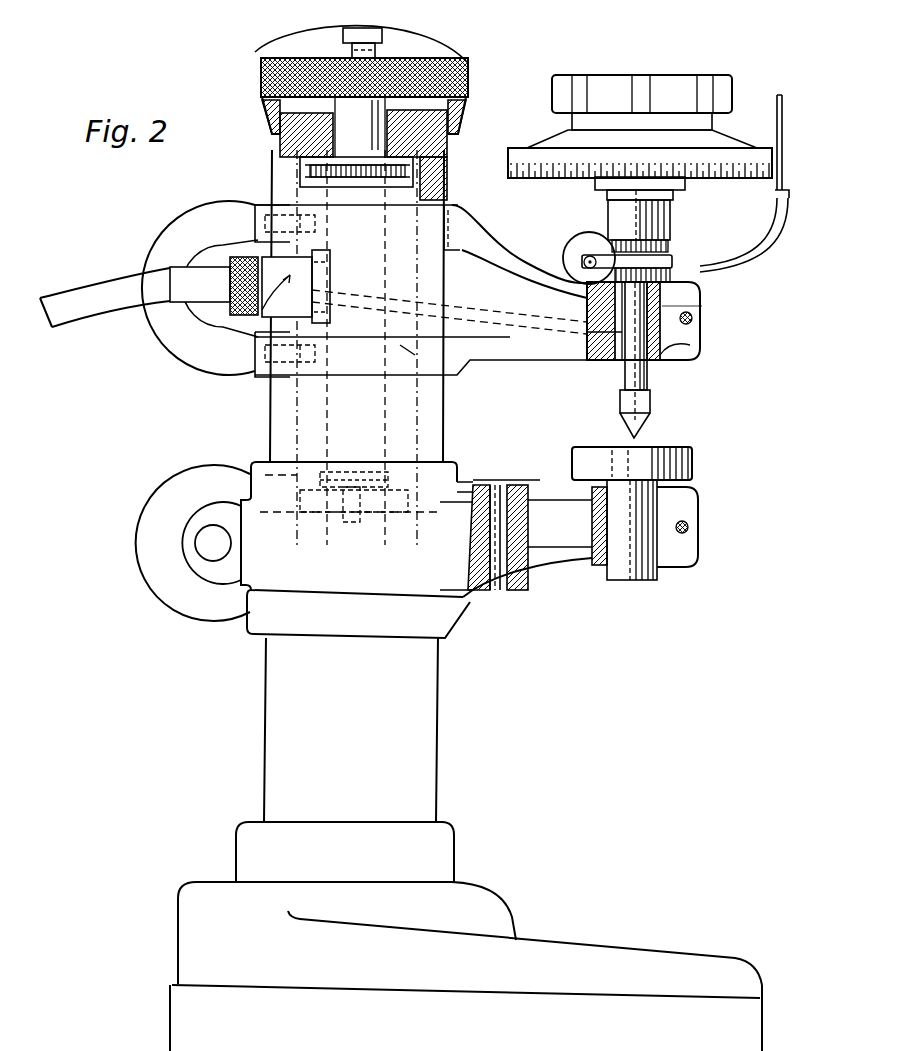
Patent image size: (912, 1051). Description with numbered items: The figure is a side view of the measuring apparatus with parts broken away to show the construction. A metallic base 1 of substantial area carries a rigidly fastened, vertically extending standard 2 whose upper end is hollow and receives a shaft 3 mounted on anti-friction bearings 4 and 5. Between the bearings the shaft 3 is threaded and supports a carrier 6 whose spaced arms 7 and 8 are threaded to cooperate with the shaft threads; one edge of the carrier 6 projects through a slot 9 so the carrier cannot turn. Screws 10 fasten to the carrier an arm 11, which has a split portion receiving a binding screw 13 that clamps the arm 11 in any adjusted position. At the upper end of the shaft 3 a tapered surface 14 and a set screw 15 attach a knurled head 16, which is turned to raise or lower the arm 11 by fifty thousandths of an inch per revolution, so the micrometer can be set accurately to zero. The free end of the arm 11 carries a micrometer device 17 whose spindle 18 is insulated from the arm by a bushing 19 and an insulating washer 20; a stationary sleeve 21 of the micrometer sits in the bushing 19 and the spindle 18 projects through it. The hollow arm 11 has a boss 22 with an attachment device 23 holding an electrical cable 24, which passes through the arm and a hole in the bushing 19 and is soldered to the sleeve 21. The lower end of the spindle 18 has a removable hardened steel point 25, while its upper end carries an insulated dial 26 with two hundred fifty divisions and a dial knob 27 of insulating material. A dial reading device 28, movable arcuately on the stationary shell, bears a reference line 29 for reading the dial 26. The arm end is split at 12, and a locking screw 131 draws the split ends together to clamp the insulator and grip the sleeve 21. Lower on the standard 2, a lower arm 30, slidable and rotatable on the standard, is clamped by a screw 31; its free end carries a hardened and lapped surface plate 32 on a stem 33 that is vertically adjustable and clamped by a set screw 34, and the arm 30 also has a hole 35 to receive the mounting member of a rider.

The metallic base 1 is at (183, 931).
The standard 2 is at (268, 705).
The shaft 3 is at (375, 435).
The anti-friction bearing 4 is at (390, 485).
The anti-friction bearing 5 is at (305, 176).
The carrier 6 is at (280, 290).
The arm of carrier 7 is at (452, 238).
The arm of carrier 8 is at (412, 355).
The slot 9 is at (285, 163).
The screws 10 is at (280, 355).
The arm 11 is at (509, 265).
The split 12 is at (690, 355).
The binding screw 13 is at (182, 253).
The locking screw 131 is at (755, 315).
The tapered surface 14 is at (262, 50).
The set screw 15 is at (342, 30).
The knurled head 16 is at (470, 95).
The micrometer device 17 is at (607, 214).
The spindle 18 is at (628, 372).
The bushing 19 is at (700, 306).
The insulating washer 20 is at (730, 292).
The stationary sleeve 21 is at (692, 320).
The boss 22 is at (300, 305).
The attachment device 23 is at (232, 312).
The electrical cable 24 is at (120, 300).
The point 25 is at (652, 423).
The dial 26 is at (508, 160).
The dial knob 27 is at (552, 97).
The dial reading device 28 is at (678, 266).
The reference line 29 is at (776, 125).
The lower arm 30 is at (274, 606).
The screw 31 is at (167, 590).
The surface plate 32 is at (692, 468).
The stem 33 is at (625, 560).
The set screw 34 is at (690, 529).
The hole 35 is at (498, 582).